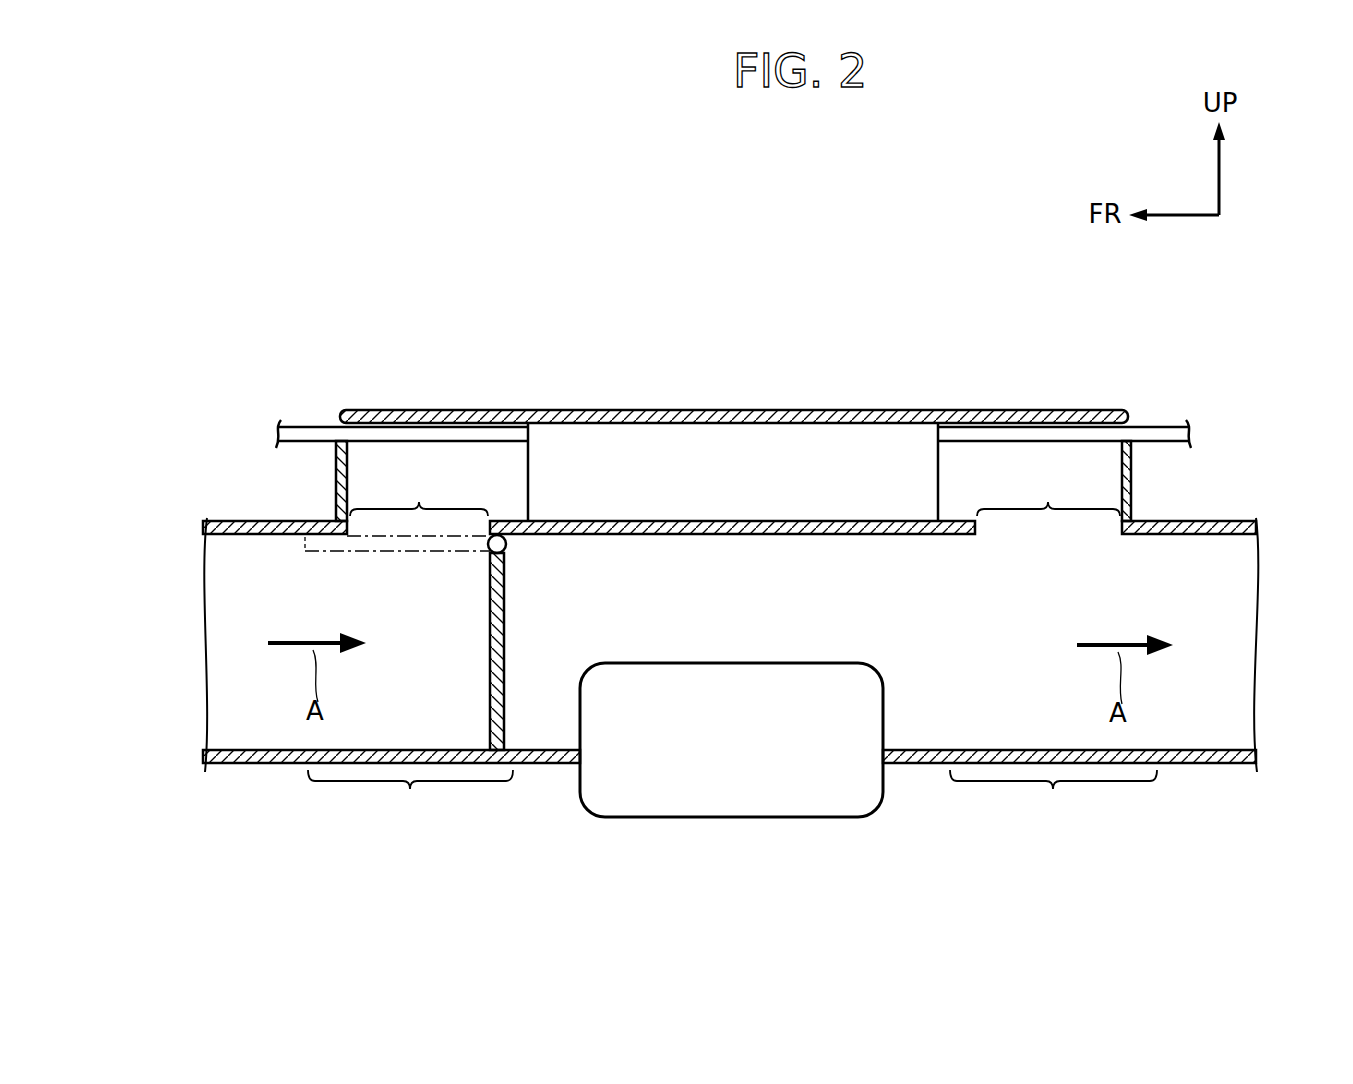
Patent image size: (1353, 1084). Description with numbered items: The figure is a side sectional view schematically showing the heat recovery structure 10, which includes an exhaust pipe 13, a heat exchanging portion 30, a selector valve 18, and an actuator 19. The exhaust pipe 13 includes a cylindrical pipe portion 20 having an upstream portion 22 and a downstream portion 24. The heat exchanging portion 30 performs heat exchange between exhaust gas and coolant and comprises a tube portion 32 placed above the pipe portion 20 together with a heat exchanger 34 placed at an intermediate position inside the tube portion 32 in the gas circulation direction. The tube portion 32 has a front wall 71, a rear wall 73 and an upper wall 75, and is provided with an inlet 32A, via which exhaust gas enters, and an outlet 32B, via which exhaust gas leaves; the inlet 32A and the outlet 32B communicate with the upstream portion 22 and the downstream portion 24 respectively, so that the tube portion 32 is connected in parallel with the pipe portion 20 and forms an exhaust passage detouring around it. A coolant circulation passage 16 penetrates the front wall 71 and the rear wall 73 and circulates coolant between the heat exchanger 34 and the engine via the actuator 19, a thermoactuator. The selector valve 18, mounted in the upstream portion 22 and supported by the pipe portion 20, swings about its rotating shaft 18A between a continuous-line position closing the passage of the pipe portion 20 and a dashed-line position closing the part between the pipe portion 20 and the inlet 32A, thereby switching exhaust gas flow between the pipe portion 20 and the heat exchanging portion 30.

The heat recovery structure 10 is at (173, 184).
The exhaust pipe 13 is at (233, 861).
The coolant circulation passage 16 is at (300, 426).
The selector valve 18 is at (504, 643).
The rotating shaft 18A is at (506, 547).
The actuator 19 is at (732, 803).
The pipe portion 20 is at (243, 766).
The upstream portion 22 is at (410, 799).
The downstream portion 24 is at (1053, 799).
The heat exchanging portion 30 is at (372, 402).
The tube portion 32 is at (432, 410).
The inlet 32A is at (419, 491).
The outlet 32B is at (1048, 492).
The heat exchanger 34 is at (723, 438).
The front wall 71 is at (336, 486).
The rear wall 73 is at (1132, 487).
The upper wall 75 is at (812, 418).